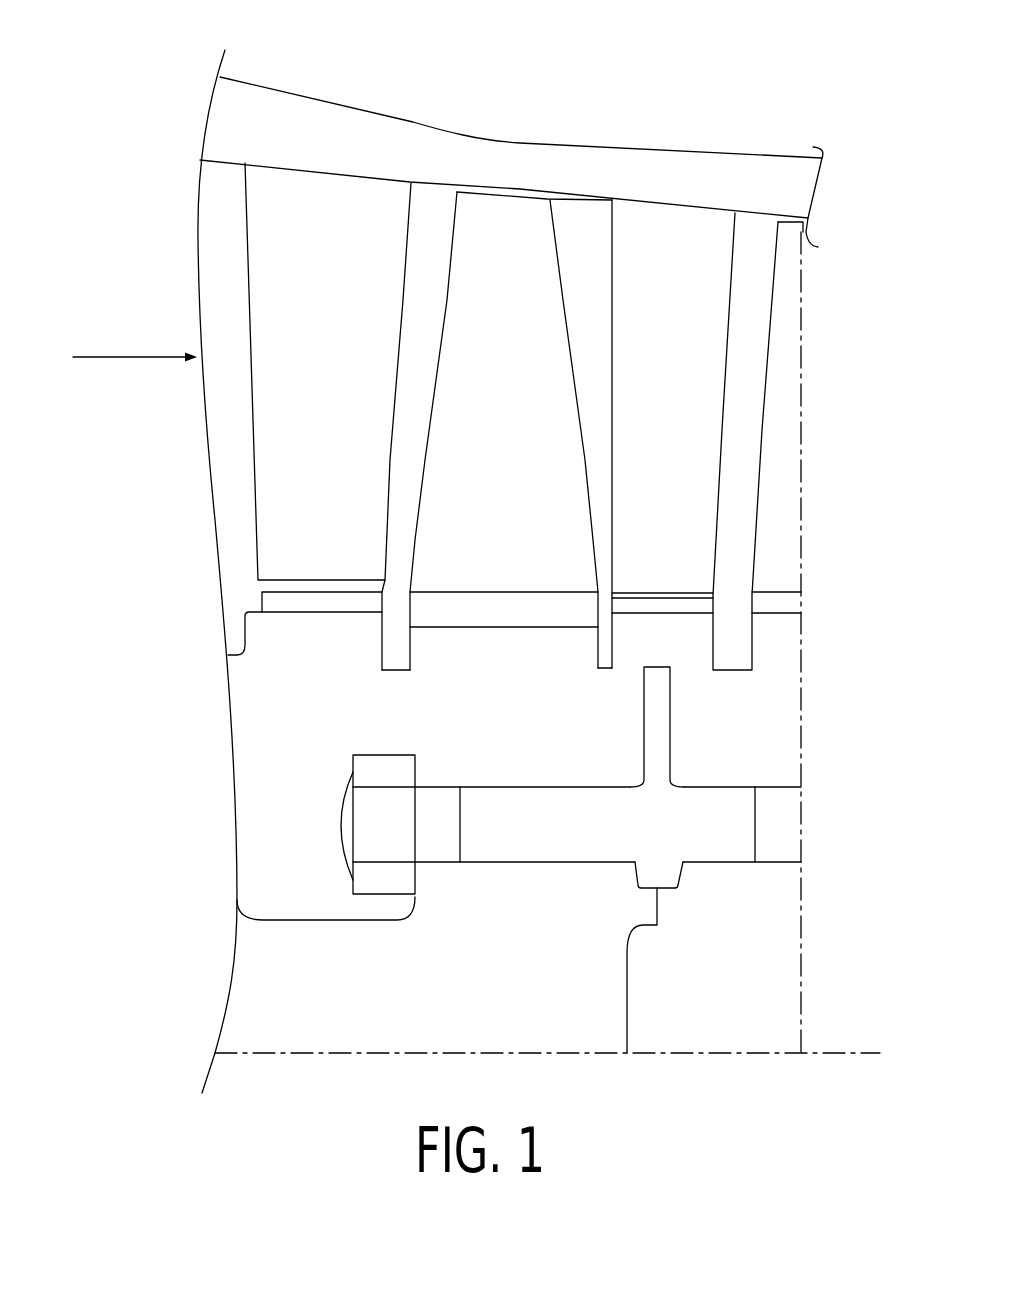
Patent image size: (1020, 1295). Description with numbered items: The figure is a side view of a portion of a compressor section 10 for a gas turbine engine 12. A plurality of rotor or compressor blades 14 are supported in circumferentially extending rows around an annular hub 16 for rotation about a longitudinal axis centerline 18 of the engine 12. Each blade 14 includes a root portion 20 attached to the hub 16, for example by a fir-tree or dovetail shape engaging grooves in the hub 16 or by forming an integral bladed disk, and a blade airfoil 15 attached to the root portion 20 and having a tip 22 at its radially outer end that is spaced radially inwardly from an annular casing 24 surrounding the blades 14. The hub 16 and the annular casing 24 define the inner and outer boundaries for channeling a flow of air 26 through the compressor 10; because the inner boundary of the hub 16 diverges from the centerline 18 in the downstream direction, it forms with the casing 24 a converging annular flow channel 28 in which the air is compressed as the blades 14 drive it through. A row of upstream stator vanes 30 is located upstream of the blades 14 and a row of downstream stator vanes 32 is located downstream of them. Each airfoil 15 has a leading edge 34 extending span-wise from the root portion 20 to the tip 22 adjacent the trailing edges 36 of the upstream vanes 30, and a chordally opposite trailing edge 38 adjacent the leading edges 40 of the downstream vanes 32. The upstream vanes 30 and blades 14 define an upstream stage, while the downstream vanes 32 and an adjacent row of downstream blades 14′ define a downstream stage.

The compressor section 10 is at (467, 548).
The gas turbine engine 12 is at (511, 125).
The rotor blades 14 is at (485, 367).
The downstream blades 14′ is at (764, 224).
The blade airfoil 15 is at (580, 434).
The annular hub 16 is at (508, 696).
The longitudinal axis centerline 18 is at (215, 1053).
The root portion 20 is at (500, 592).
The tip 22 is at (467, 197).
The annular casing 24 is at (477, 137).
The flow of air 26 is at (108, 357).
The converging annular flow channel 28 is at (226, 411).
The upstream stator vanes 30 is at (291, 348).
The downstream stator vanes 32 is at (735, 387).
The leading edge 34 is at (437, 382).
The trailing edges 36 is at (393, 427).
The trailing edge 38 is at (572, 357).
The leading edges 40 is at (615, 427).